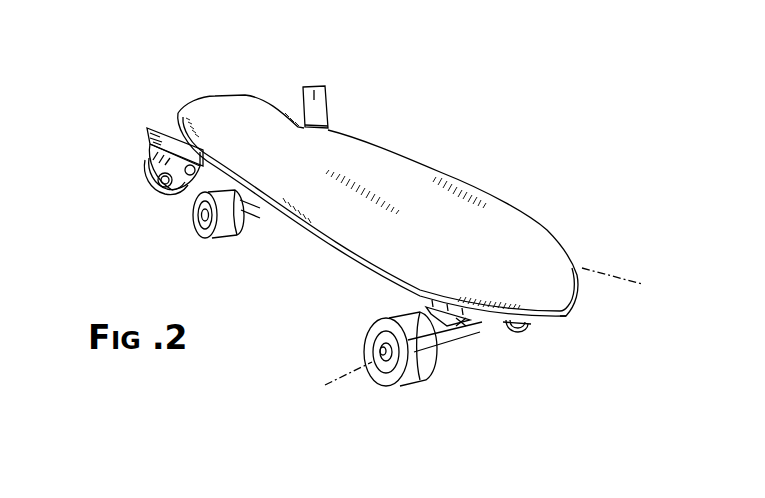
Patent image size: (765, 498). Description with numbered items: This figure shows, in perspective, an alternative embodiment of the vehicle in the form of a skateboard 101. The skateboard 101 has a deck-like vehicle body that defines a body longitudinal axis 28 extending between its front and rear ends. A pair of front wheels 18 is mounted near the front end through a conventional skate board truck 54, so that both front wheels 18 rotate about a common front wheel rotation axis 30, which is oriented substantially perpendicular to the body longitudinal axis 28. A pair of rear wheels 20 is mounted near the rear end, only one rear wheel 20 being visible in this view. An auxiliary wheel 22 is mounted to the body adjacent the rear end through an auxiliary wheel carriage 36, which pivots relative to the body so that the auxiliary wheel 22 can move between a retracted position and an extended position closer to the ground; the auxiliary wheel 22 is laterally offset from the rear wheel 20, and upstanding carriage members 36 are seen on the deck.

The skateboard 101 is at (474, 100).
The auxiliary wheel carriage 36 is at (340, 93).
The auxiliary wheel 22 is at (146, 175).
The rear wheel 20 is at (200, 227).
The front wheel 18 is at (574, 358).
The skate board truck 54 is at (466, 322).
The front wheel rotation axis 30 is at (622, 288).
The body longitudinal axis 28 is at (33, 7).